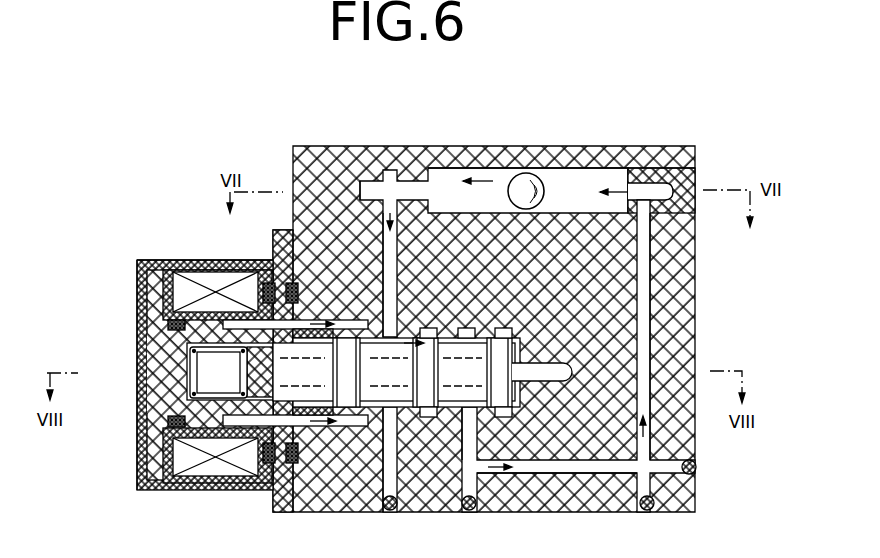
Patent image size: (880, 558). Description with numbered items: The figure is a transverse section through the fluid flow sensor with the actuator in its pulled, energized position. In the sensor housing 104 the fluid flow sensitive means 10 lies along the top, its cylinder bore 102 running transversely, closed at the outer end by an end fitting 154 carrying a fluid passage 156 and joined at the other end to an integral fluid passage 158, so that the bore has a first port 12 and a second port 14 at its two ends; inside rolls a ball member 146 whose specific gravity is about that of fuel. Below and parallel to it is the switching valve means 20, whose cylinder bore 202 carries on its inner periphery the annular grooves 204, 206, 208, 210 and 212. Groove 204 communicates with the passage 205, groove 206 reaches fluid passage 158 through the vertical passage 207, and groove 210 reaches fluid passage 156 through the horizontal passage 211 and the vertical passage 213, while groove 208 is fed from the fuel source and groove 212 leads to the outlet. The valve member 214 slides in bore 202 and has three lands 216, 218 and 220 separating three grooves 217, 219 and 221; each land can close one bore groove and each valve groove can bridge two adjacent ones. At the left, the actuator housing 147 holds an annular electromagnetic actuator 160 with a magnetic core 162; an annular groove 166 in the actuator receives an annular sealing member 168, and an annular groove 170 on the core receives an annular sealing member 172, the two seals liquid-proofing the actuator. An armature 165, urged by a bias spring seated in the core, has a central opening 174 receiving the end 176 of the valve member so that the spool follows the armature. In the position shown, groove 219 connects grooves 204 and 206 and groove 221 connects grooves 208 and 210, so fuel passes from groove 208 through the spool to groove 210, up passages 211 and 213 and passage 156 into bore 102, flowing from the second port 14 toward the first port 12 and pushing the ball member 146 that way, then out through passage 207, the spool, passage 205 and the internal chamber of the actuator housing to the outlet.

The fluid flow sensitive means 10 is at (573, 159).
The first port 12 is at (441, 176).
The second port 14 is at (660, 184).
The switching valve means 20 is at (441, 322).
The cylinder bore 102 is at (592, 176).
The sensor housing 104 is at (333, 150).
The ball member 146 is at (536, 189).
The actuator housing 147 is at (157, 260).
The end fitting 154 is at (692, 180).
The fluid passage 156 is at (672, 150).
The fluid passage 158 is at (402, 172).
The annular electromagnetic actuator 160 is at (150, 293).
The magnetic core 162 is at (153, 379).
The armature 165 is at (200, 474).
The annular groove 166 is at (252, 303).
The annular sealing member 168 is at (268, 281).
The annular groove 170 is at (170, 326).
The annular sealing member 172 is at (168, 423).
The central opening 174 is at (247, 422).
The end of the valve member 176 is at (260, 373).
The cylinder bore 202 is at (401, 326).
The annular groove 204 is at (354, 424).
The passage 205 is at (301, 425).
The annular groove 206 is at (433, 411).
The vertical passage 207 is at (386, 243).
The annular groove 208 is at (446, 418).
The annular groove 210 is at (470, 412).
The horizontal passage 211 is at (574, 470).
The annular groove 212 is at (512, 411).
The vertical passage 213 is at (648, 348).
The valve member 214 is at (305, 352).
The land 216 is at (346, 354).
The annular groove 217 is at (278, 432).
The land 218 is at (426, 372).
The annular groove 219 is at (374, 438).
The land 220 is at (520, 328).
The annular groove 221 is at (453, 430).